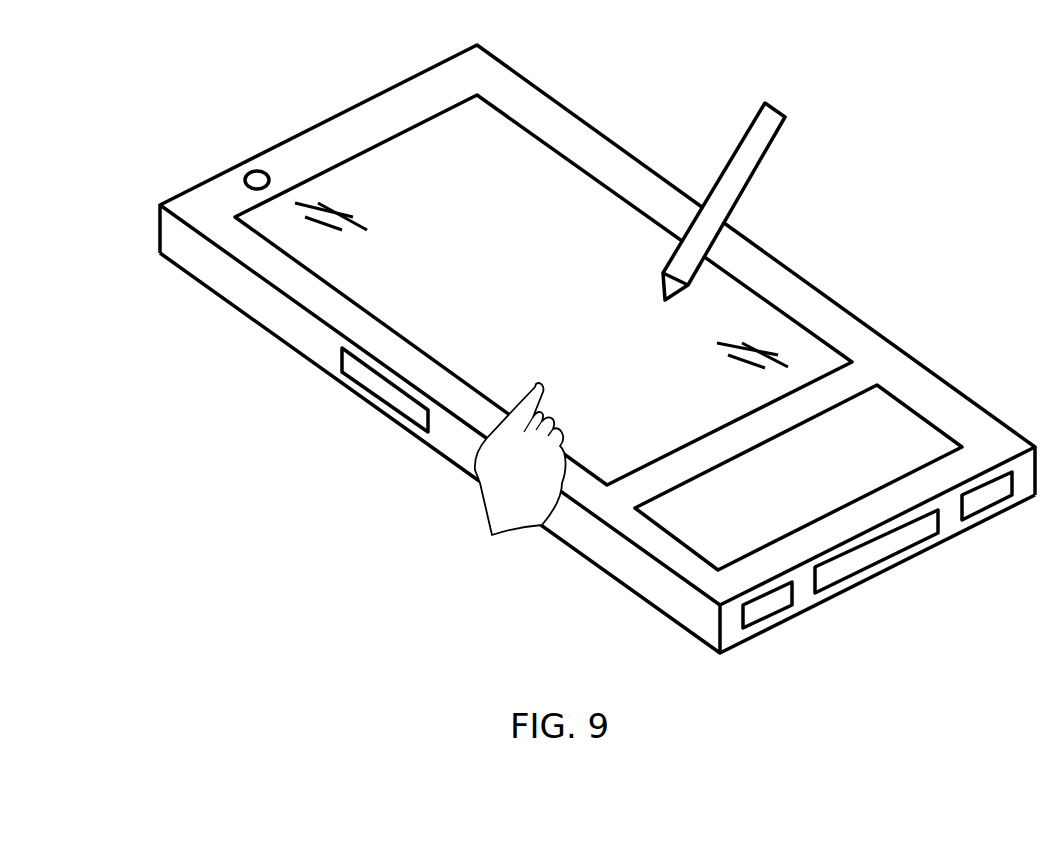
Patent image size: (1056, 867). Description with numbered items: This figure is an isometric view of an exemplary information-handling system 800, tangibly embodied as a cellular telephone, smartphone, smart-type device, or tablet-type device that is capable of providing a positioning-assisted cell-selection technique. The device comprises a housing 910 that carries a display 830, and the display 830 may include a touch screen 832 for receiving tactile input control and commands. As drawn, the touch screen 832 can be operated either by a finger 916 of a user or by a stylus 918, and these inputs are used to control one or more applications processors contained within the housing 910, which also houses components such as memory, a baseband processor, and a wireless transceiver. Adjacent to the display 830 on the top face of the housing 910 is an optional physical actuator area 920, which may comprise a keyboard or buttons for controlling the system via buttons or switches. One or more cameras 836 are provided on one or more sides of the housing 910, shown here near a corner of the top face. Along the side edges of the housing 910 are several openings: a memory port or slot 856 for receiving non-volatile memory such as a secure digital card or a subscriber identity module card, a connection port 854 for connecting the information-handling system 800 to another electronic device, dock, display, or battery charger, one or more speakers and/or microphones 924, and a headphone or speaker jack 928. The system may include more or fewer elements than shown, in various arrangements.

The information-handling system 800 is at (611, 82).
The housing 910 is at (417, 73).
The display 830 is at (479, 158).
The touch screen 832 is at (570, 285).
The camera 836 is at (250, 173).
The headphone or speaker jack 928 is at (770, 617).
The stylus 918 is at (743, 137).
The physical actuator area 920 is at (888, 435).
The finger 916 is at (533, 385).
The memory port or slot 856 is at (380, 387).
The connection port 854 is at (890, 557).
The speakers and/or microphones 924 is at (992, 508).